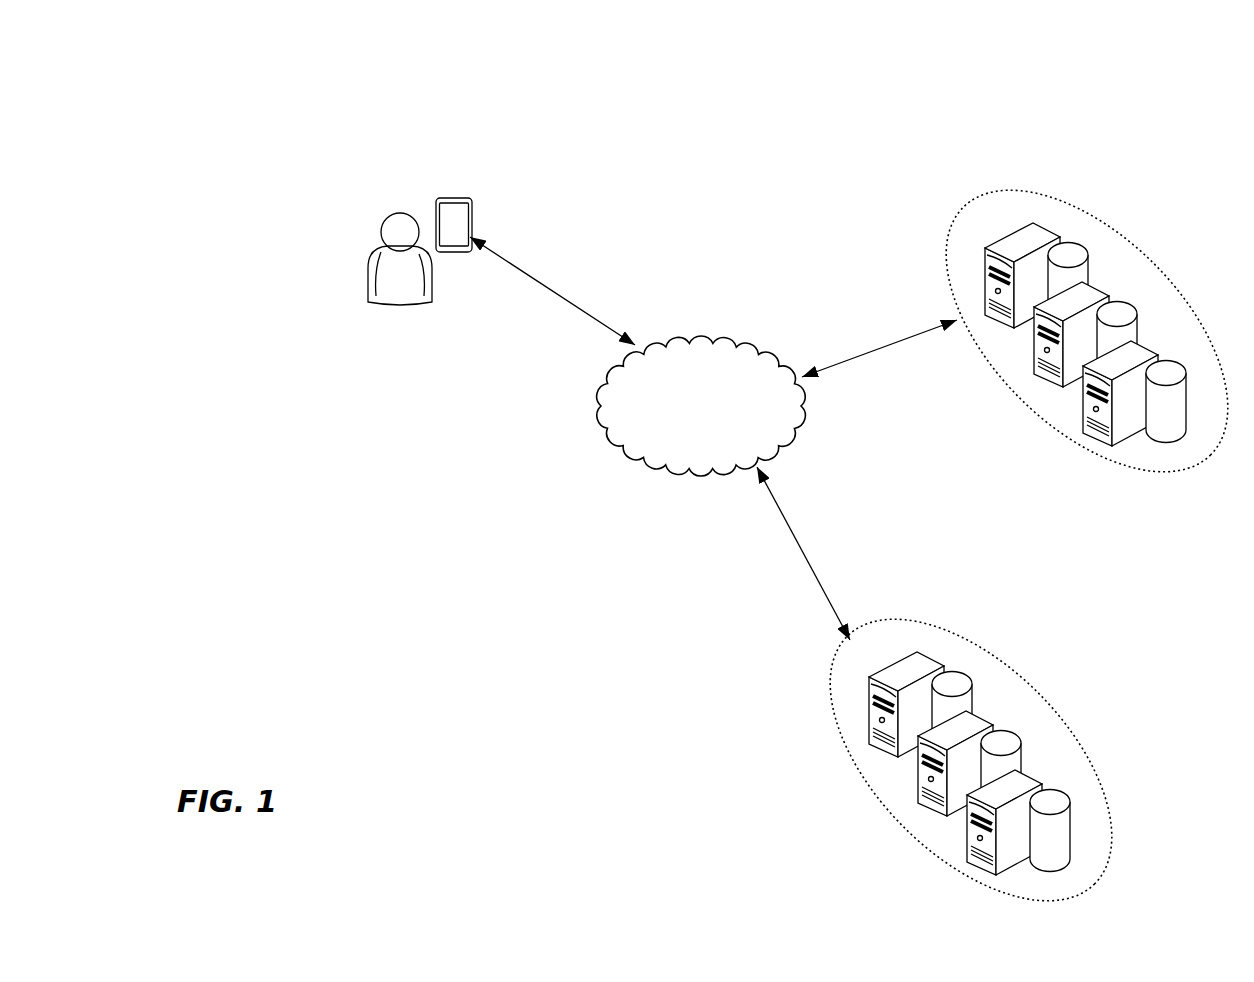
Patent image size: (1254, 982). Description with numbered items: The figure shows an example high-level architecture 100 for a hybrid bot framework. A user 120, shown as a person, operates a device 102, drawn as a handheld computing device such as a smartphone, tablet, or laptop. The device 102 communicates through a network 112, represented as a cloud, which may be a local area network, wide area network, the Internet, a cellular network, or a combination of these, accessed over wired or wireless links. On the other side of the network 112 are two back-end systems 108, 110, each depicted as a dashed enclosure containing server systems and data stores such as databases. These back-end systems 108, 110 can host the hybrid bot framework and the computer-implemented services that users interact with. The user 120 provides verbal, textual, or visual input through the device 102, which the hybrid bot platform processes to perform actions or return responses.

The high-level architecture 100 is at (932, 80).
The device 102 is at (472, 222).
The back-end system 108 is at (1140, 247).
The back-end system 110 is at (971, 760).
The network 112 is at (700, 336).
The user 120 is at (393, 212).